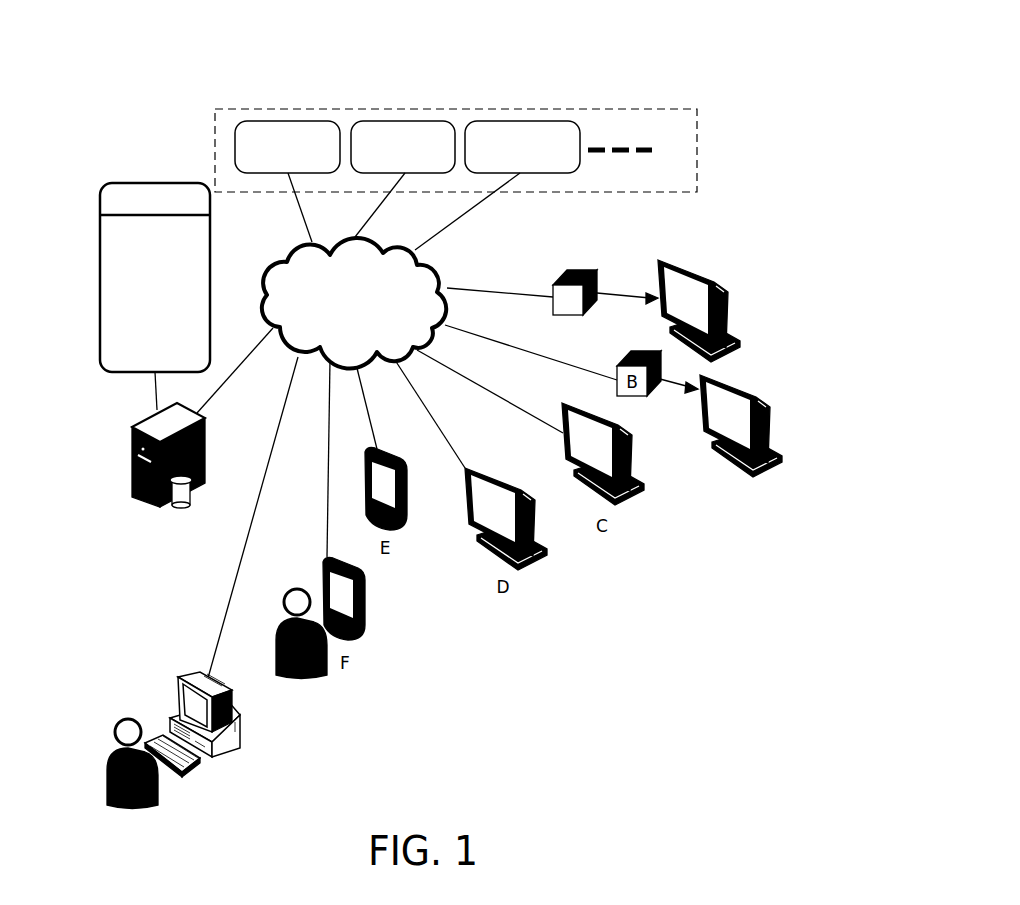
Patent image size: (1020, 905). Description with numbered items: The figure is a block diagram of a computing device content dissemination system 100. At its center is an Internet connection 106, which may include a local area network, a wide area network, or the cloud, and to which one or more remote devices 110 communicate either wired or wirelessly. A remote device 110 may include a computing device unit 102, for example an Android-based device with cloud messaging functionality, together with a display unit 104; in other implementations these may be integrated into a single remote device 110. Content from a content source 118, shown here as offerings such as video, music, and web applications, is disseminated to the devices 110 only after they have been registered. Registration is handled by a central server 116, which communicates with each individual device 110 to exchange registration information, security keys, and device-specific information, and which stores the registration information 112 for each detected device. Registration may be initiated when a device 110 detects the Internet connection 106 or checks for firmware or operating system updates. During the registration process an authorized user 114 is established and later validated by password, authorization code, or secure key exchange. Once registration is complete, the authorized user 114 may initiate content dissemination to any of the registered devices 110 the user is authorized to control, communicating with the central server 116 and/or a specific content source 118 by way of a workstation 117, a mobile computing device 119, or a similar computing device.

The computing device content dissemination system 100 is at (404, 63).
The computing device unit 102 is at (573, 270).
The display unit 104 is at (688, 262).
The Internet connection 106 is at (344, 284).
The remote devices 110 is at (413, 588).
The registration information 112 is at (153, 181).
The authorized user 114 is at (128, 716).
The central server 116 is at (205, 470).
The workstation 117 is at (235, 745).
The content source 118 is at (649, 132).
The mobile computing device 119 is at (367, 612).